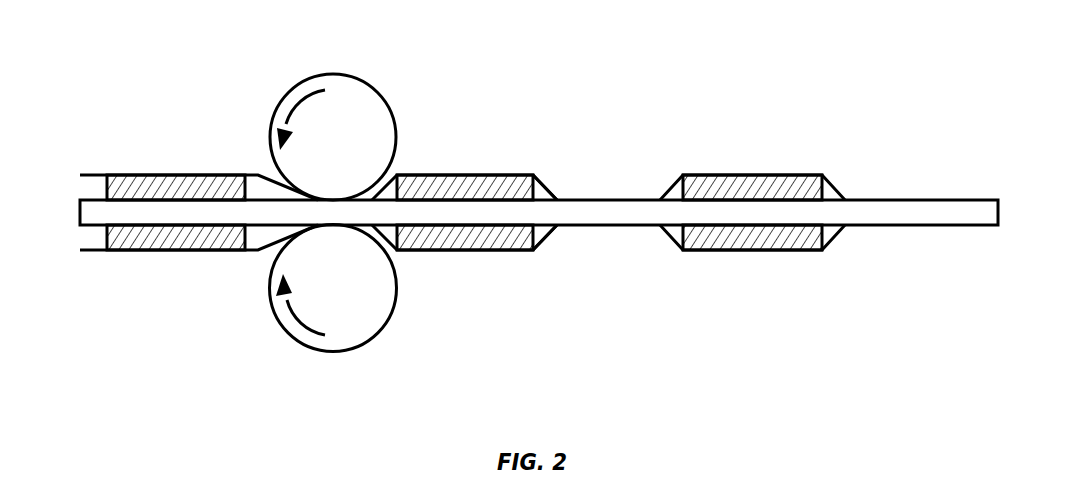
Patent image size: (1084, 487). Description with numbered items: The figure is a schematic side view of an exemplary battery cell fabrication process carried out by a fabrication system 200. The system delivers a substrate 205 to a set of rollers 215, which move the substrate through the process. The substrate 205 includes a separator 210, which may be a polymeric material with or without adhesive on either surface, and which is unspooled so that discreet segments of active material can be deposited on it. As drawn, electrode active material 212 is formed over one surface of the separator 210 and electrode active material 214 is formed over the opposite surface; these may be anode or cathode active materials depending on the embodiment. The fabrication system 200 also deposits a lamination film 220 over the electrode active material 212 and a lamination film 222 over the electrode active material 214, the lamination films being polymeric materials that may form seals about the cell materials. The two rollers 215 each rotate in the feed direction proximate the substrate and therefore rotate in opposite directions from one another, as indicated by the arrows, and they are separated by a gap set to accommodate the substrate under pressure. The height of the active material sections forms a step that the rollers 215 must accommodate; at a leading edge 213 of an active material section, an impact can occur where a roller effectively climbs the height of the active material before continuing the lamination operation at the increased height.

The fabrication system 200 is at (172, 84).
The substrate 205 is at (777, 175).
The separator 210 is at (268, 228).
The electrode active material 212 is at (502, 175).
The leading edge 213 is at (243, 188).
The electrode active material 214 is at (503, 250).
The rollers 215 is at (368, 85).
The lamination film 220 is at (552, 190).
The lamination film 222 is at (552, 232).